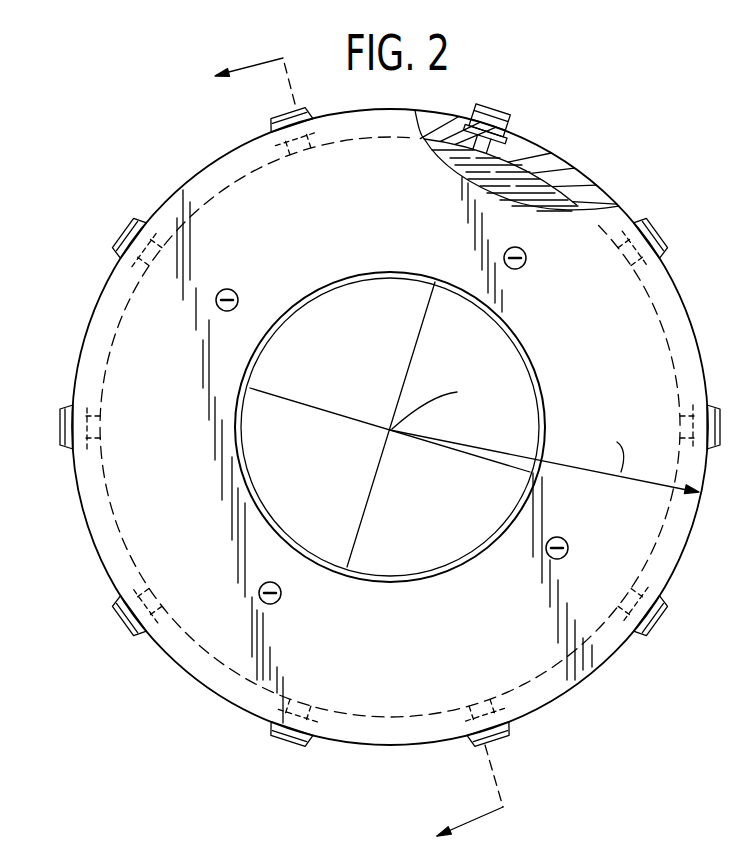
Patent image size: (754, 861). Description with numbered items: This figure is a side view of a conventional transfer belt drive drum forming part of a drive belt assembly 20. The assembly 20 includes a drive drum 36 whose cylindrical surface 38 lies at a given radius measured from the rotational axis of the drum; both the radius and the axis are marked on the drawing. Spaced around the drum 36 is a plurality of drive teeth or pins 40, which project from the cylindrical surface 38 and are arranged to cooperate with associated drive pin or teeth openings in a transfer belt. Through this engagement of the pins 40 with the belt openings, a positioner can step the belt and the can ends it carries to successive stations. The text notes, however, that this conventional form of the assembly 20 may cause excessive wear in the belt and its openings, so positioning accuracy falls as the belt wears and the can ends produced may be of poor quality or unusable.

The drive belt assembly 20 is at (407, 447).
The drive drum 36 is at (534, 704).
The cylindrical surface 38 is at (633, 203).
The drive teeth or pins 40 is at (641, 633).